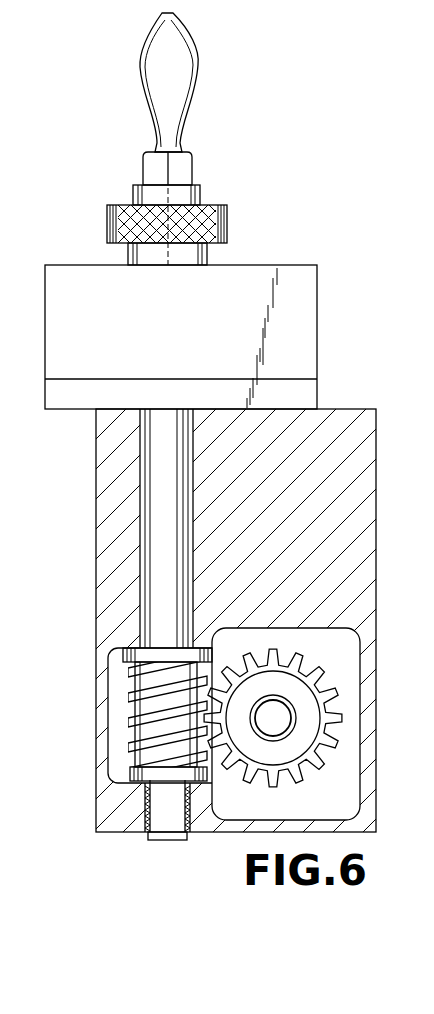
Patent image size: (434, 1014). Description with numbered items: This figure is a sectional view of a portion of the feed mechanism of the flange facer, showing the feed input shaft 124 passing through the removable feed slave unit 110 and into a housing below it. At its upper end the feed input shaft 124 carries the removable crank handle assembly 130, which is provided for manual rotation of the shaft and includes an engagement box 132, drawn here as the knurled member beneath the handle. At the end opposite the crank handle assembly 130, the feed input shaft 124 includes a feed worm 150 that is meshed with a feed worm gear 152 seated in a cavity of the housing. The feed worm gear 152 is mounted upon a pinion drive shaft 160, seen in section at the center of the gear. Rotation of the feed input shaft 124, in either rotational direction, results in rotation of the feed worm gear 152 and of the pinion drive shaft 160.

The feed slave unit 110 is at (324, 303).
The feed input shaft 124 is at (191, 175).
The crank handle assembly 130 is at (191, 112).
The engagement box 132 is at (228, 227).
The feed worm 150 is at (130, 718).
The feed worm gear 152 is at (343, 745).
The pinion drive shaft 160 is at (280, 713).